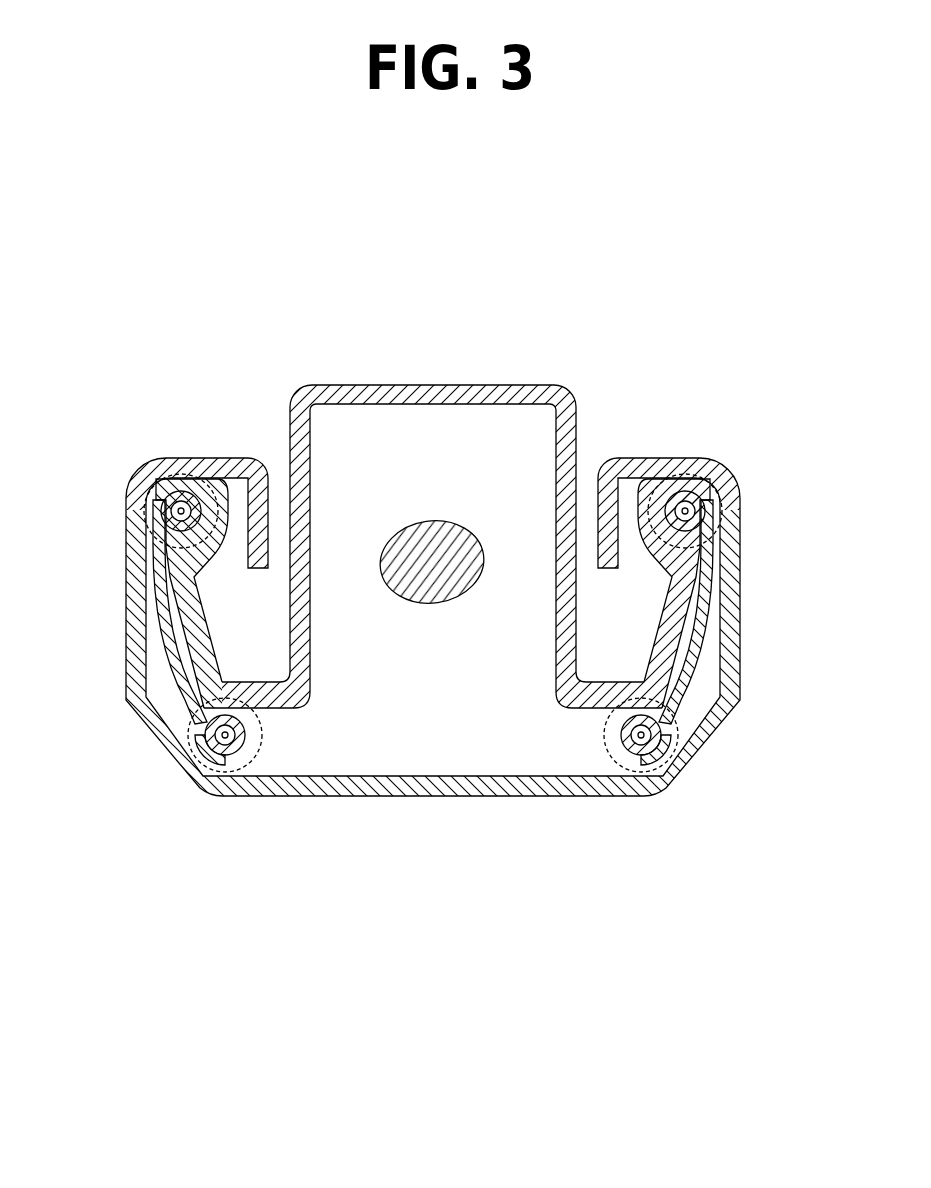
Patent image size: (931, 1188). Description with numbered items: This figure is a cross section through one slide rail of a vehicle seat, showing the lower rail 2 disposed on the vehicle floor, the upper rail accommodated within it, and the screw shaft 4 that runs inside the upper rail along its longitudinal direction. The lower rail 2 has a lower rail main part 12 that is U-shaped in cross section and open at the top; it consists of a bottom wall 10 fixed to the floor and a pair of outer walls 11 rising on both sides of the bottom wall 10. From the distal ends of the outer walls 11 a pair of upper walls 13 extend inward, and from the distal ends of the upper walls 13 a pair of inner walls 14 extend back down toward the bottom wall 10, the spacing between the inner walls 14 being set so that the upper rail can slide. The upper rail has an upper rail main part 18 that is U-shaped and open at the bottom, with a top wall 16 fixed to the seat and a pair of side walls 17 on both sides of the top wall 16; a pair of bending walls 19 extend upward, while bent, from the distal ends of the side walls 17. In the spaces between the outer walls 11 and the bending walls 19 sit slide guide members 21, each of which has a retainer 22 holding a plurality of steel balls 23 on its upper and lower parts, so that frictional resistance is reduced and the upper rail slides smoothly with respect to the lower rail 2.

The lower rail 2 is at (746, 625).
The screw shaft 4 is at (402, 608).
The bottom wall 10 is at (397, 788).
The outer walls 11 is at (136, 668).
The lower rail main part 12 is at (127, 890).
The upper walls 13 is at (232, 468).
The inner walls 14 is at (262, 508).
The top wall 16 is at (405, 392).
The side walls 17 is at (292, 440).
The upper rail main part 18 is at (617, 292).
The bending walls 19 is at (178, 583).
The slide guide members 21 is at (150, 647).
The retainer 22 is at (166, 623).
The steel balls 23 is at (180, 511).